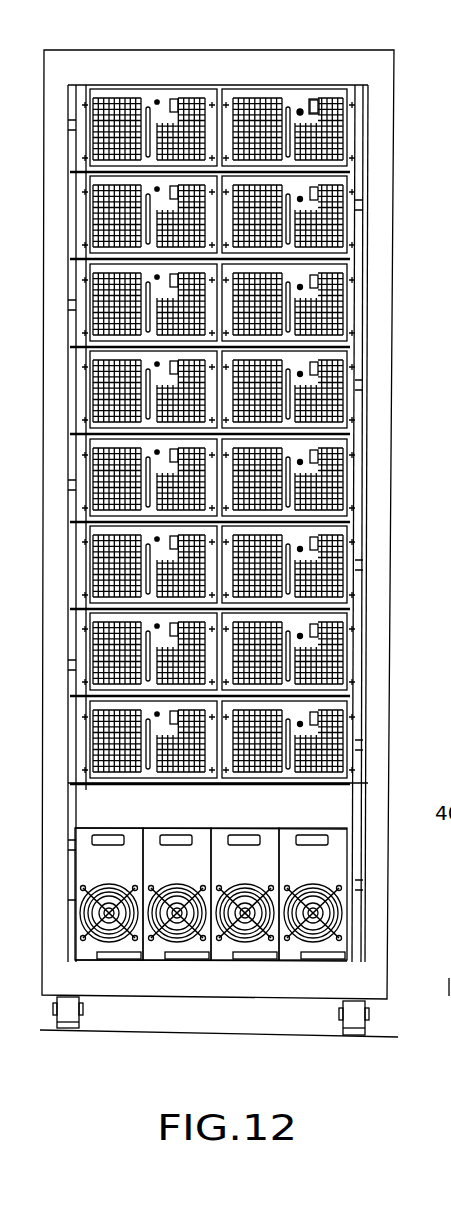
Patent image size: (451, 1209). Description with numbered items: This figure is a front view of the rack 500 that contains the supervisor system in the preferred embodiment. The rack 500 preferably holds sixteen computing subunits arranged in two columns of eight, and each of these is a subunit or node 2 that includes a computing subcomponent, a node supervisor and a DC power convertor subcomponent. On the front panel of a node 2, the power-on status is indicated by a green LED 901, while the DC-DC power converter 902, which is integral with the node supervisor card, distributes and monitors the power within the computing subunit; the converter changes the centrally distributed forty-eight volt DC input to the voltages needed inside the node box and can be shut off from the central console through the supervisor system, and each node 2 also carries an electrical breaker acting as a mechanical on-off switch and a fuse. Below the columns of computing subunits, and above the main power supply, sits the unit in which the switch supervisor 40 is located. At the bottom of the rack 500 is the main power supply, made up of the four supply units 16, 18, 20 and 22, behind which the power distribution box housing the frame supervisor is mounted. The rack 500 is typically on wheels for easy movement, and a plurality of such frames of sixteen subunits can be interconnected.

The subunit or node 2 is at (148, 82).
The rack 500 is at (253, 50).
The green LED 901 is at (374, 82).
The DC-DC power converter 902 is at (340, 106).
The switch supervisor 40 is at (340, 810).
The main power supply 16 is at (88, 948).
The main power supply 18 is at (166, 958).
The main power supply 20 is at (255, 958).
The main power supply 22 is at (313, 958).